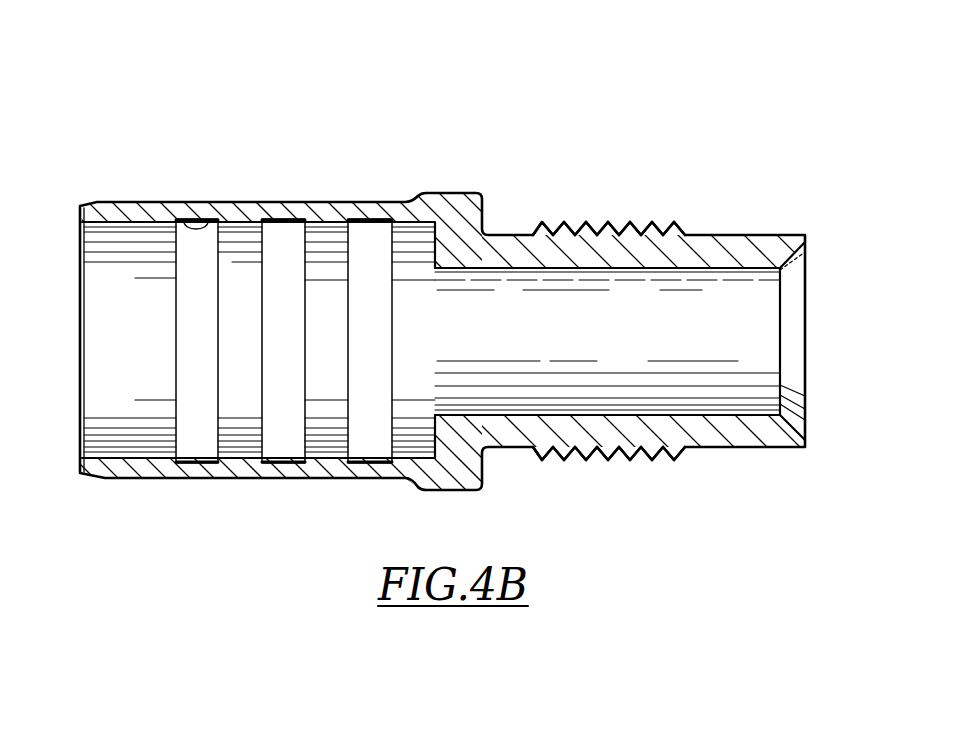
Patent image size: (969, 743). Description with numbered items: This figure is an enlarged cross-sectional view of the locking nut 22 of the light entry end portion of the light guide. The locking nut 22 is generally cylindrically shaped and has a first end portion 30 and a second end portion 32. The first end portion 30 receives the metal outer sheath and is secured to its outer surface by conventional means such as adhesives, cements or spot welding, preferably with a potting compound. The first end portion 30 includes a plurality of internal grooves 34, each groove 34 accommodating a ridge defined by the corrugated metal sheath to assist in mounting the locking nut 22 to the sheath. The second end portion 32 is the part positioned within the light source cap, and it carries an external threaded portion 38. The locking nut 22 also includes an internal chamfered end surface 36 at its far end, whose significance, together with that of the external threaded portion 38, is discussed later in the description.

The locking nut 22 is at (252, 146).
The first end portion 30 is at (234, 471).
The second end portion 32 is at (736, 246).
The internal grooves 34 is at (192, 224).
The internal chamfered end surface 36 is at (790, 258).
The external threaded portion 38 is at (638, 221).